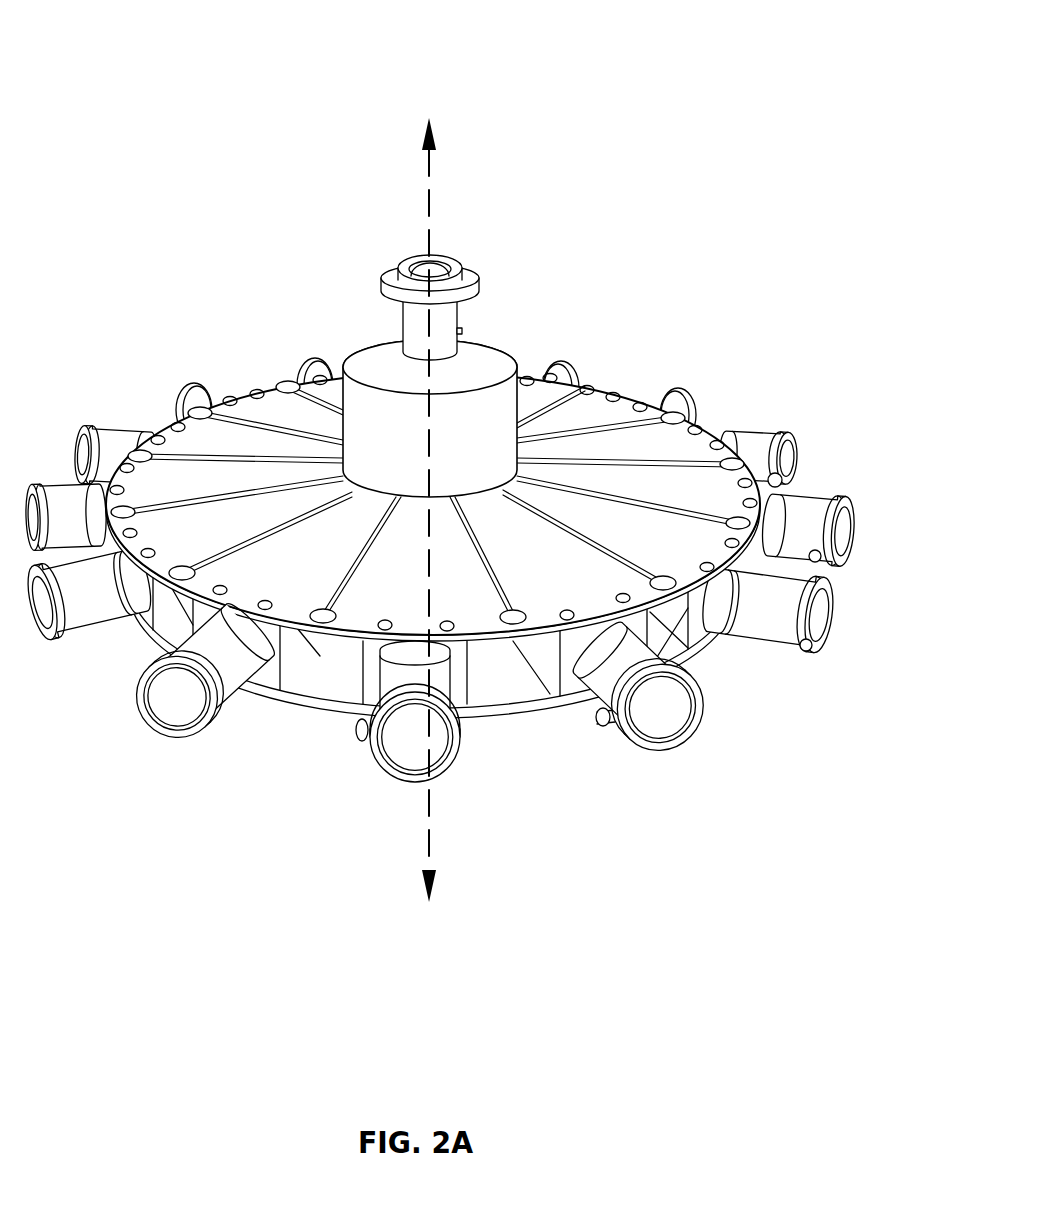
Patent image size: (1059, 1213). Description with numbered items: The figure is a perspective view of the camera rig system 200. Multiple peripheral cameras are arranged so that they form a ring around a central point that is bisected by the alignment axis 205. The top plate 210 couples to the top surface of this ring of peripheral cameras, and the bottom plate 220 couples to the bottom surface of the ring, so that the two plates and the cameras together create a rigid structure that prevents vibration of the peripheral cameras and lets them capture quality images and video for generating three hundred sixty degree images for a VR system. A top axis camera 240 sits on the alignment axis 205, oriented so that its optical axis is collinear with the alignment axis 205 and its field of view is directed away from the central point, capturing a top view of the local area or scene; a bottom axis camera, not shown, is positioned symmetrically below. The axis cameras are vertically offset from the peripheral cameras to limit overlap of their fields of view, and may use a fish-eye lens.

The camera rig system 200 is at (125, 27).
The alignment axis 205 is at (308, 192).
The top plate 210 is at (694, 447).
The bottom plate 220 is at (532, 684).
The top axis camera 240 is at (460, 243).